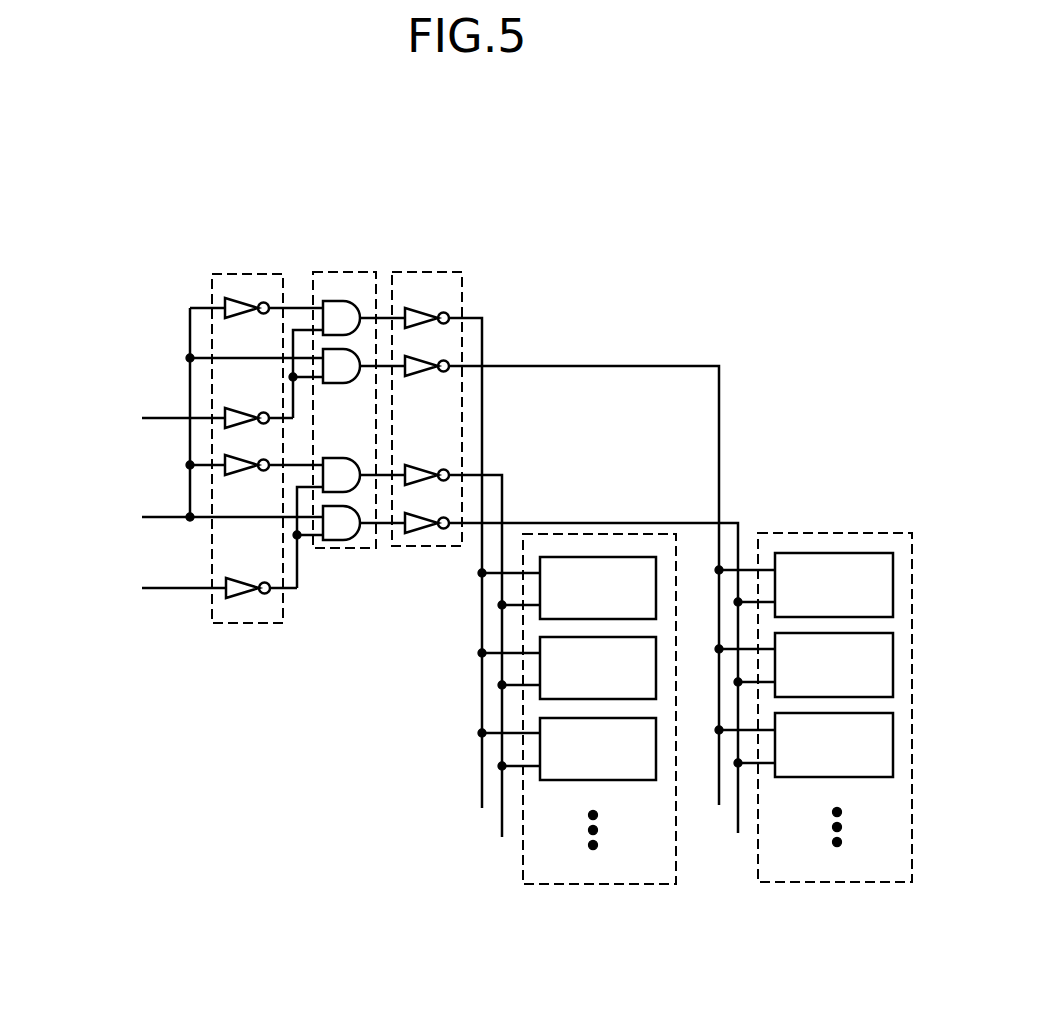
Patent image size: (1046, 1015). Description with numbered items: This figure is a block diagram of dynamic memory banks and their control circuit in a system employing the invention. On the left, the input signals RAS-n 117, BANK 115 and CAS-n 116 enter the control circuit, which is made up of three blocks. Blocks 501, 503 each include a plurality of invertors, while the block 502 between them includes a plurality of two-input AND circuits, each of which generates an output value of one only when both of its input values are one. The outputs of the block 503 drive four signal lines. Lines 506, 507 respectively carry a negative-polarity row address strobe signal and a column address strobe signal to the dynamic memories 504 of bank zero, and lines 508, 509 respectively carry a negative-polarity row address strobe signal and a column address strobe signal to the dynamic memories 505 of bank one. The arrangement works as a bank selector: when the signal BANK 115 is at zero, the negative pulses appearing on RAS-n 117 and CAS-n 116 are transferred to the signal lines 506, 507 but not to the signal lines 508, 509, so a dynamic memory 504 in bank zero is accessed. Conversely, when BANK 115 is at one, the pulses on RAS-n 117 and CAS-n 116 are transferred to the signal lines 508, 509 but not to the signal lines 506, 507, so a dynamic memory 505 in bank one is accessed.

The block of invertors 501 is at (240, 625).
The block of two-input AND circuits 502 is at (333, 549).
The block of invertors 503 is at (420, 547).
The dynamic memories of bank 0 504 is at (580, 886).
The dynamic memories of bank 1 505 is at (833, 884).
The row address strobe signal line for bank 0 506 is at (482, 341).
The column address strobe signal line for bank 0 507 is at (502, 483).
The row address strobe signal line for bank 1 508 is at (719, 425).
The column address strobe signal line for bank 1 509 is at (608, 521).
The RAS-n signal 117 is at (138, 437).
The BANK signal 115 is at (191, 531).
The CAS-n signal 116 is at (140, 606).